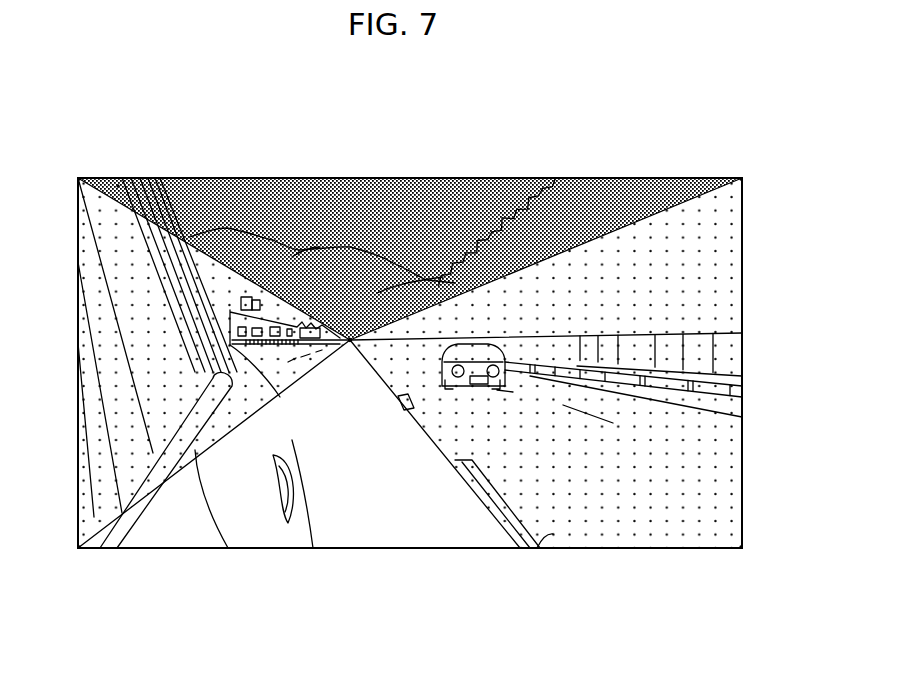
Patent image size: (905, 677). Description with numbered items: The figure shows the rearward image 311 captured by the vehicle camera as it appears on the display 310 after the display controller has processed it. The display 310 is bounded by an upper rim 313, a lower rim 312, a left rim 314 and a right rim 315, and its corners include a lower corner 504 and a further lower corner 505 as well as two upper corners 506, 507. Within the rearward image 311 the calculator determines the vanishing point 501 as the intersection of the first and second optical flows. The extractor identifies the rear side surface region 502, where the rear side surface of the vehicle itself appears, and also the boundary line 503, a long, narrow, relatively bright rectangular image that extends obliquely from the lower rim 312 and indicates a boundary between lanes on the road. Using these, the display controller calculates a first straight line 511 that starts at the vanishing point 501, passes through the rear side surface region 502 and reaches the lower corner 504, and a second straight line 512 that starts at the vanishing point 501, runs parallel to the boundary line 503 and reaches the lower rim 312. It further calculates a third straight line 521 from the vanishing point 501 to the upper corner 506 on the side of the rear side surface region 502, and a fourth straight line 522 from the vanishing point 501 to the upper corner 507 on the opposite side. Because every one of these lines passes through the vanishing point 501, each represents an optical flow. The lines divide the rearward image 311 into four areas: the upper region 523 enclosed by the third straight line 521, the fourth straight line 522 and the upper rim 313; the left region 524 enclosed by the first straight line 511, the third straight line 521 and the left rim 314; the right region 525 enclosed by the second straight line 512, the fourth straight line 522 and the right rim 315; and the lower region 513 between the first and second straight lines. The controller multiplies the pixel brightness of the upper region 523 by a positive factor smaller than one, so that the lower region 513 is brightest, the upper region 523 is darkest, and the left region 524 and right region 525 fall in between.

The display 310 is at (373, 104).
The rearward image 311 is at (628, 178).
The lower rim 312 is at (403, 548).
The upper rim 313 is at (283, 178).
The left rim 314 is at (147, 350).
The right rim 315 is at (743, 290).
The vanishing point 501 is at (350, 340).
The rear side surface region 502 is at (118, 186).
The boundary line 503 is at (553, 534).
The lower corner 504 is at (79, 548).
The lower right corner 505 is at (742, 548).
The upper corner 506 is at (78, 178).
The upper corner 507 is at (742, 178).
The first straight line 511 is at (277, 412).
The second straight line 512 is at (440, 460).
The lower region 513 is at (346, 512).
The third straight line 521 is at (218, 258).
The fourth straight line 522 is at (505, 277).
The upper region 523 is at (435, 210).
The left region 524 is at (78, 390).
The right region 525 is at (690, 433).